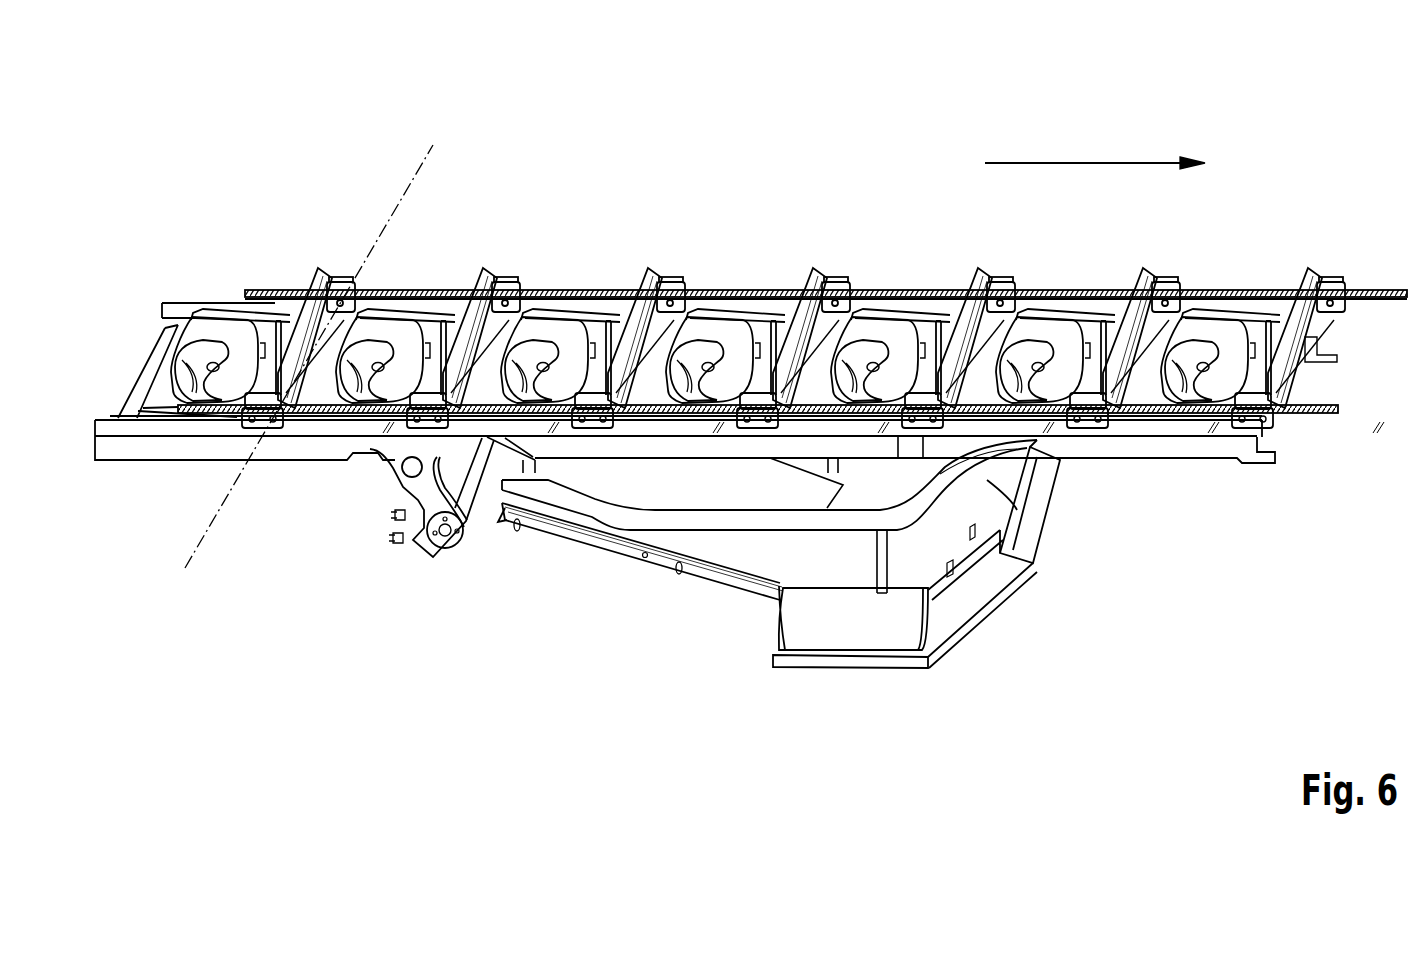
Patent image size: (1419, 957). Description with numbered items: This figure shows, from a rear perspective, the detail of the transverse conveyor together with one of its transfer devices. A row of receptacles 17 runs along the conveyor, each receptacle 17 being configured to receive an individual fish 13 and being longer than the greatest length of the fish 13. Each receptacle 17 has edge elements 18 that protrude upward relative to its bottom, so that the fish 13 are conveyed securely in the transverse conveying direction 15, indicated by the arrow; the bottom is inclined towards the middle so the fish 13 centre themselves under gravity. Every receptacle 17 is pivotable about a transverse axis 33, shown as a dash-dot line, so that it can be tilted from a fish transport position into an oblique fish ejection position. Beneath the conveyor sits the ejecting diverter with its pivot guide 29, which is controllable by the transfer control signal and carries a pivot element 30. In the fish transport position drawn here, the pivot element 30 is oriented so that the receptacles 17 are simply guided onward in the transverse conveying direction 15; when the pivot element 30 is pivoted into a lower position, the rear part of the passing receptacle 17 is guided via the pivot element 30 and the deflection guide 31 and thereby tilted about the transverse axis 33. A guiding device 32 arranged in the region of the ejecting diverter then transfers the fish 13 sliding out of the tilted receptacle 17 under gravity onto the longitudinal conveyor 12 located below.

The longitudinal conveyor 12 is at (850, 627).
The fish 13 is at (734, 330).
The transverse conveying direction 15 is at (1090, 160).
The receptacle 17 is at (774, 328).
The edge element 18 is at (816, 272).
The pivot guide 29 is at (457, 563).
The pivot element 30 is at (398, 474).
The deflection guide 31 is at (623, 525).
The guiding device 32 is at (585, 535).
The transverse axis 33 is at (211, 552).